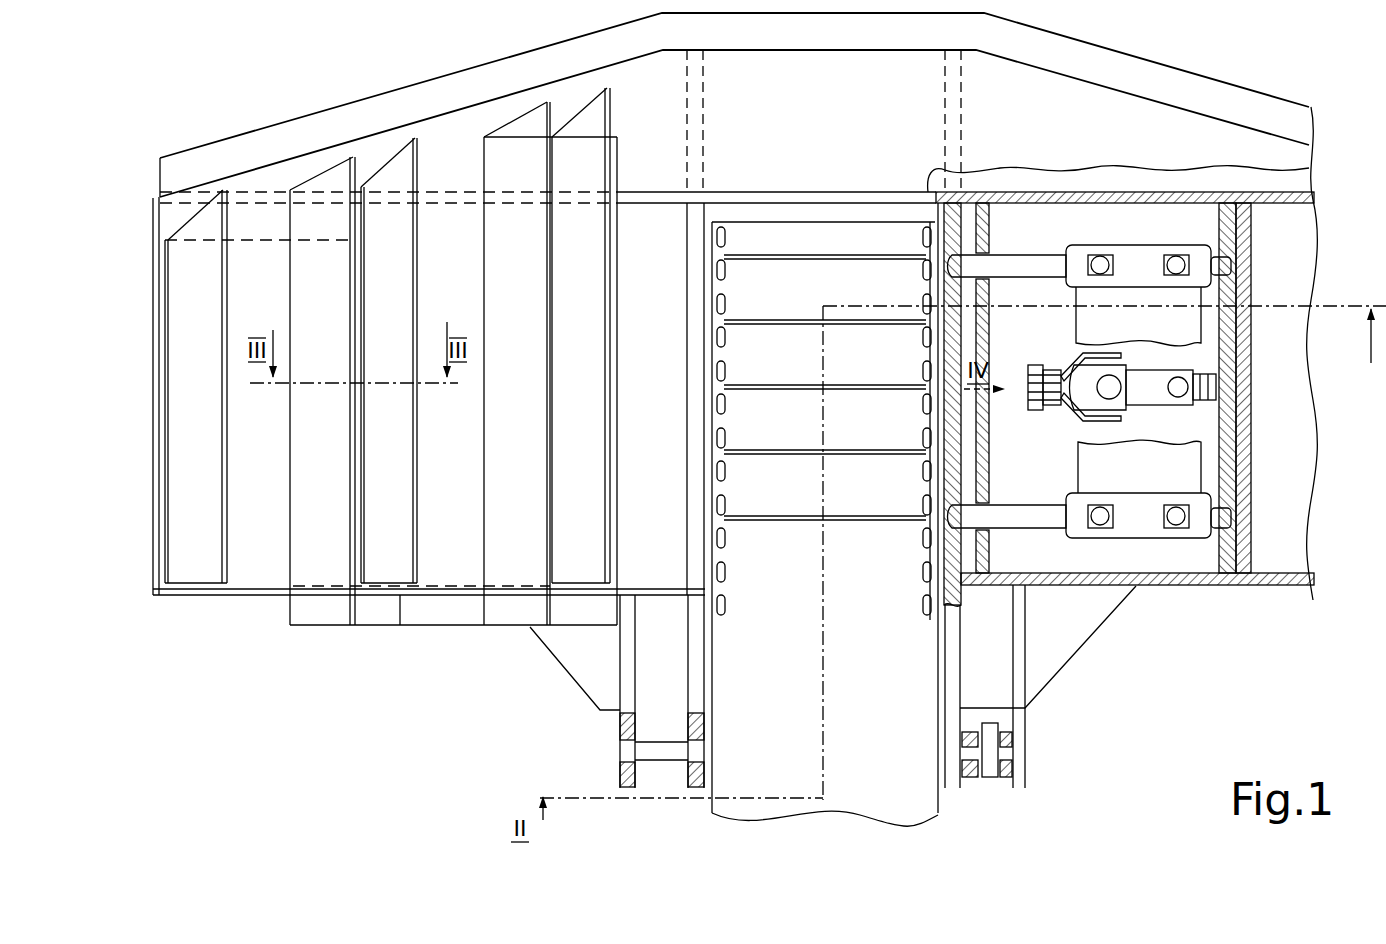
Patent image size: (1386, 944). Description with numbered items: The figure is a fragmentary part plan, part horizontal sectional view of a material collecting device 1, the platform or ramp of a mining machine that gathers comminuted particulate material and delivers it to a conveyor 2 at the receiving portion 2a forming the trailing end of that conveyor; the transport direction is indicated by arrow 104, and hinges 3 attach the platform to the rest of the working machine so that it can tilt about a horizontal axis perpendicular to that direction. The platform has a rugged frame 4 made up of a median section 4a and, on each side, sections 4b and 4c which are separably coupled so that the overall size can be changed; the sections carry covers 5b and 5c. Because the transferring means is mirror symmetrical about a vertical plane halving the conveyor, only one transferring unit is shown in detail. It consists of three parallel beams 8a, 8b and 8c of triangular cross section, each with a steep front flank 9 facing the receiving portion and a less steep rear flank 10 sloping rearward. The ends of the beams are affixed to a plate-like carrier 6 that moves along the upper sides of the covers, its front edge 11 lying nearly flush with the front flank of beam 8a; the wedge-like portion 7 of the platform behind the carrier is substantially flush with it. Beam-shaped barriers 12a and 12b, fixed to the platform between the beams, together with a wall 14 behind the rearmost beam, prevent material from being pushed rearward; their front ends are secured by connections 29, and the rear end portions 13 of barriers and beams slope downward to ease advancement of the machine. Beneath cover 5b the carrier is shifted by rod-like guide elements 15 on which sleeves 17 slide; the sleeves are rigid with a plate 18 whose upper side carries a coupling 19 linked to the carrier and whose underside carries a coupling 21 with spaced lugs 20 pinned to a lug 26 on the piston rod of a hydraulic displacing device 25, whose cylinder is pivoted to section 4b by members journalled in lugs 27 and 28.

The material collecting device 1 is at (1174, 33).
The conveyor 2 is at (908, 802).
The receiving portion 2a is at (770, 240).
The hinges 3 is at (682, 800).
The frame 4 is at (1192, 602).
The median section 4a is at (810, 203).
The section 4b is at (1016, 192).
The section 4c is at (1268, 192).
The cover 5b is at (662, 223).
The cover 5c is at (160, 246).
The carrier 6 is at (250, 567).
The wedge-like portion 7 is at (797, 97).
The beam 8a is at (580, 127).
The beam 8b is at (395, 230).
The beam 8c is at (183, 290).
The first flank 9 is at (612, 266).
The second flank 10 is at (587, 340).
The front edge 11 is at (622, 185).
The barrier 12a is at (498, 572).
The barrier 12b is at (315, 440).
The end portions 13 is at (522, 127).
The wall 14 is at (153, 360).
The guide elements 15 is at (1014, 267).
The sleeves 17 is at (1136, 266).
The plate 18 is at (1115, 482).
The second coupling 19 is at (1098, 254).
The lugs 20 is at (1078, 365).
The first coupling 21 is at (1149, 417).
The displacing device 25 is at (1144, 385).
The lug 26 is at (1059, 402).
The lugs 27 is at (1216, 375).
The lugs 28 is at (1216, 394).
The connections 29 is at (363, 615).
The arrow 104 is at (823, 282).